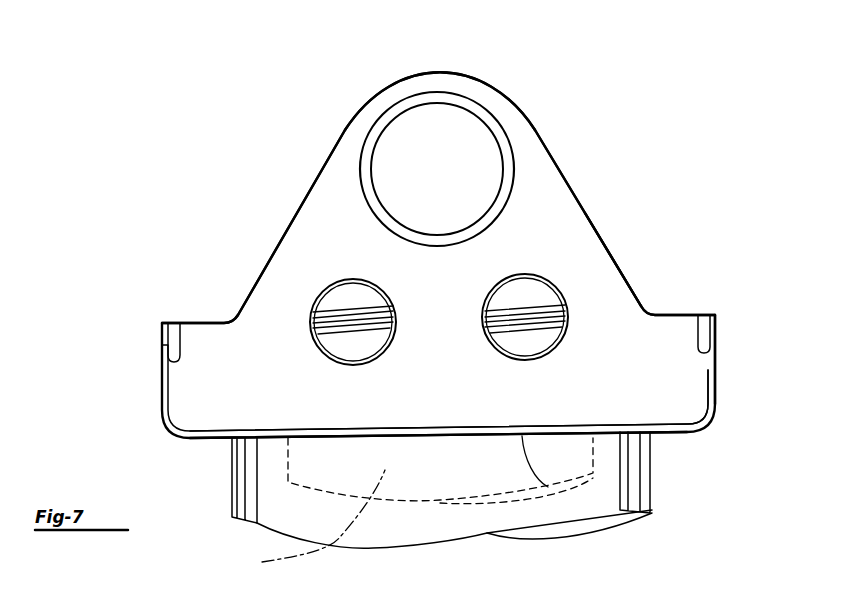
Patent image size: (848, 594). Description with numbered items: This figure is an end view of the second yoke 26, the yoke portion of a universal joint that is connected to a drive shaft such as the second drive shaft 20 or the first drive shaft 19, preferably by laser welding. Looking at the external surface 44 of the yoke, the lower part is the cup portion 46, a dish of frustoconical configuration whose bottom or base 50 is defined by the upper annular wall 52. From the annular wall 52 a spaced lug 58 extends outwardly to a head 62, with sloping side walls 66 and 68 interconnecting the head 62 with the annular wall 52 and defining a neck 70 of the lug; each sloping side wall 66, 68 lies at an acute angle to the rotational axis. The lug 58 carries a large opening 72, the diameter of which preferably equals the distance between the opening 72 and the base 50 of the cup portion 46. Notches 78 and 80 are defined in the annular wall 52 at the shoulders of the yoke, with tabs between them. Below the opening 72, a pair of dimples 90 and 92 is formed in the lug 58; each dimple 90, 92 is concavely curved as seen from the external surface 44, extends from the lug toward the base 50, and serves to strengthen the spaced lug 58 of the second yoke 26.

The first drive shaft 19 is at (310, 522).
The second drive shaft 20 is at (232, 479).
The second yoke 26 is at (562, 110).
The external surface 44 is at (692, 392).
The cup portion 46 is at (717, 358).
The bottom or base 50 is at (440, 470).
The annular wall 52 is at (450, 378).
The spaced lug 58 is at (567, 243).
The head 62 is at (437, 72).
The sloping side wall 66 is at (571, 188).
The sloping side wall 68 is at (292, 224).
The neck 70 is at (226, 316).
The opening 72 is at (368, 170).
The notch 78 is at (709, 318).
The notch 80 is at (170, 334).
The dimple 90 is at (352, 341).
The dimple 92 is at (509, 302).